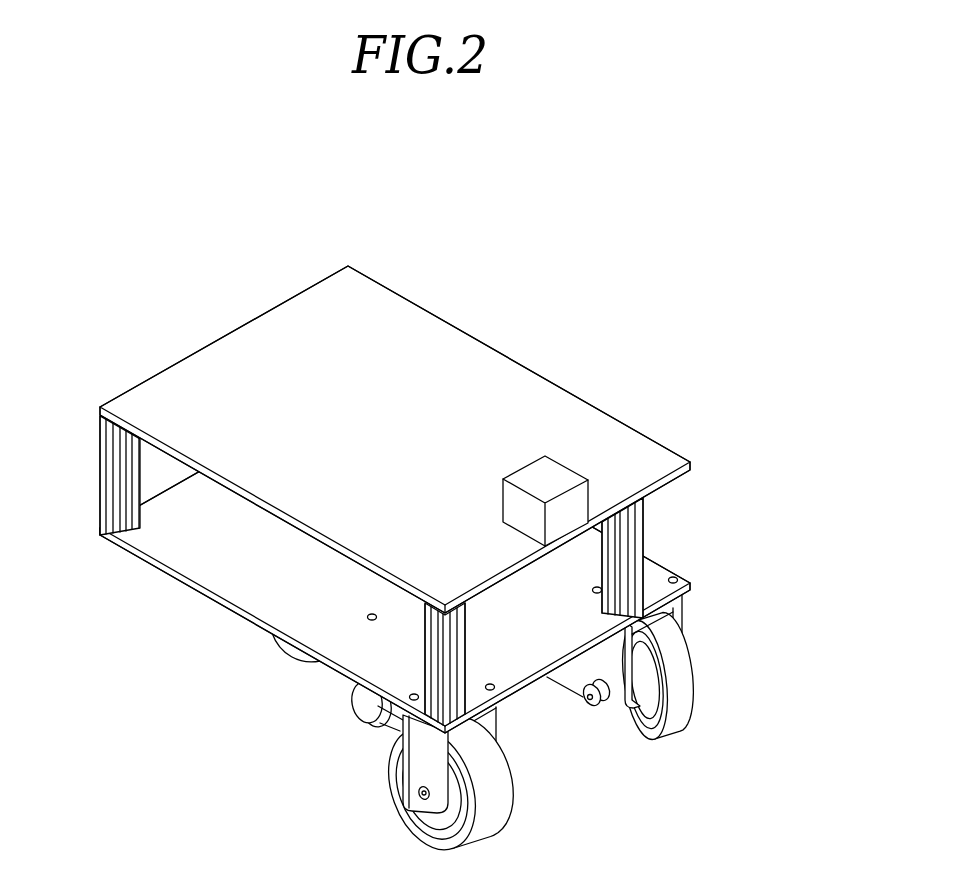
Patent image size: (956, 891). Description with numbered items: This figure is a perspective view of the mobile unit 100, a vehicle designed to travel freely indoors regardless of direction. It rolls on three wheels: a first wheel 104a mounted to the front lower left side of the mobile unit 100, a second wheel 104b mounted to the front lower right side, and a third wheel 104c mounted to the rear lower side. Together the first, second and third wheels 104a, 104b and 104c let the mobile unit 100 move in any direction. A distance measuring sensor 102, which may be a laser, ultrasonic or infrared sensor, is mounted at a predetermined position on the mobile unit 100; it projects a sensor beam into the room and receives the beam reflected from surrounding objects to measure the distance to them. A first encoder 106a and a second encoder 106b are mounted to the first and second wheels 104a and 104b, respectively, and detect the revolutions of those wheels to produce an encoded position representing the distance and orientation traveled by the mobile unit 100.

The mobile unit 100 is at (262, 326).
The distance measuring sensor 102 is at (557, 473).
The first wheel 104a is at (490, 828).
The second wheel 104b is at (687, 693).
The third wheel 104c is at (285, 647).
The first encoder 106a is at (360, 707).
The second encoder 106b is at (683, 618).